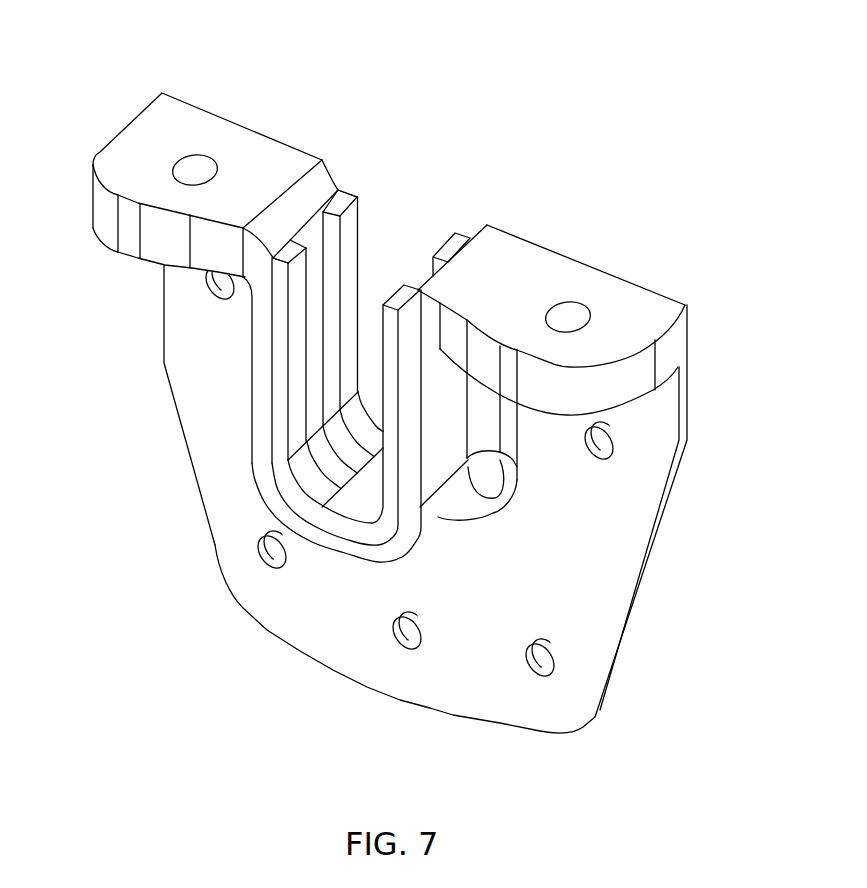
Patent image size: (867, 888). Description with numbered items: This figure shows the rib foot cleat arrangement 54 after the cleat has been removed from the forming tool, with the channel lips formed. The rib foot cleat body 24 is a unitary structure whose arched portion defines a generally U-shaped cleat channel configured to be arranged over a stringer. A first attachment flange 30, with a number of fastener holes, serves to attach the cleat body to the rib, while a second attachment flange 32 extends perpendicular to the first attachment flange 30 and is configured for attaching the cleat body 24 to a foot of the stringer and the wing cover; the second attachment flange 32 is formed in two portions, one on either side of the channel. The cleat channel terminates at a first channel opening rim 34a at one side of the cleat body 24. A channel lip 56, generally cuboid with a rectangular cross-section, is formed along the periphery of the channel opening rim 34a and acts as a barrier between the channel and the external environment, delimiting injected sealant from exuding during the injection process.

The bracket assembly 54 is at (86, 96).
The second attachment flange 32 is at (533, 283).
The first attachment flange 30 is at (613, 557).
The first channel opening rim 34a is at (272, 359).
The cleat body 24 is at (440, 465).
The channel lip 56 is at (352, 226).